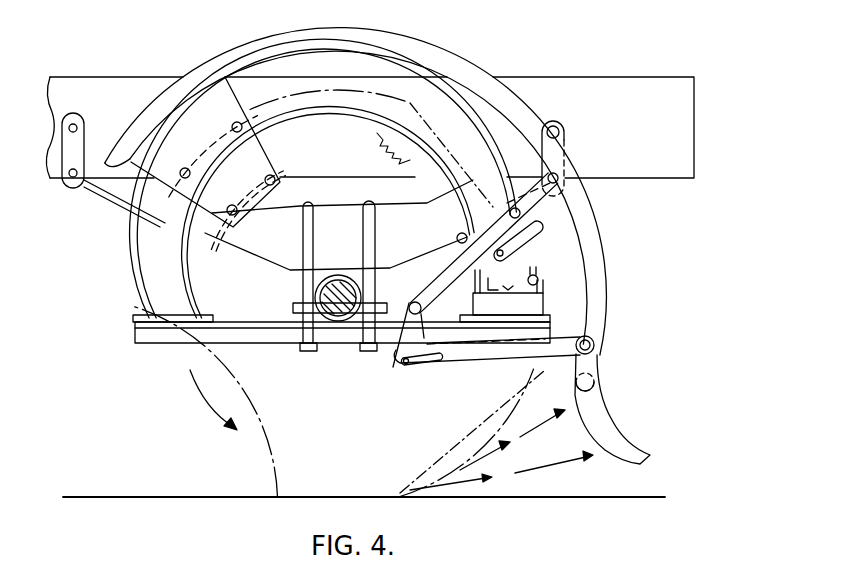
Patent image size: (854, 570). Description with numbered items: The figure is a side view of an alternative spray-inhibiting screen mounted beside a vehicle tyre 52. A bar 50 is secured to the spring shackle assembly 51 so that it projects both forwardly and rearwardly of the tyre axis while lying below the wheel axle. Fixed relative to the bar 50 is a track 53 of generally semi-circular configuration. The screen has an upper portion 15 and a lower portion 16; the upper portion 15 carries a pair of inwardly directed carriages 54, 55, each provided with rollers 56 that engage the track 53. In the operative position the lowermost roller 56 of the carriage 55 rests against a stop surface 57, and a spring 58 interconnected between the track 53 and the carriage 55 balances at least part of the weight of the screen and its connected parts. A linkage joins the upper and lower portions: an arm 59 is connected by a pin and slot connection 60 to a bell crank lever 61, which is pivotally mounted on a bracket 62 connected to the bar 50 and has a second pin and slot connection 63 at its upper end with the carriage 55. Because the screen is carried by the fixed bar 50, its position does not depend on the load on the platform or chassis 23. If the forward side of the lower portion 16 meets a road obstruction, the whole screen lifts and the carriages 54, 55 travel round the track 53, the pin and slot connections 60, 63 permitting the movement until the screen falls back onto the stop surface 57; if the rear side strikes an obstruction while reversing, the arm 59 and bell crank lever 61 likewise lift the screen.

The upper portion of the screen 15 is at (586, 228).
The lower portion of the screen 16 is at (602, 432).
The platform or chassis 23 is at (102, 100).
The bar 50 is at (248, 340).
The spring shackle assembly 51 is at (362, 236).
The tyre 52 is at (148, 383).
The track 53 is at (163, 272).
The carriage 54 is at (203, 117).
The carriage 55 is at (548, 208).
The rollers 56 is at (191, 173).
The stop surface 57 is at (505, 297).
The spring 58 is at (403, 147).
The arm 59 is at (482, 353).
The pin and slot connection 60 is at (398, 362).
The bell crank lever 61 is at (437, 288).
The bracket 62 is at (425, 366).
The pin and slot connection 63 is at (530, 251).